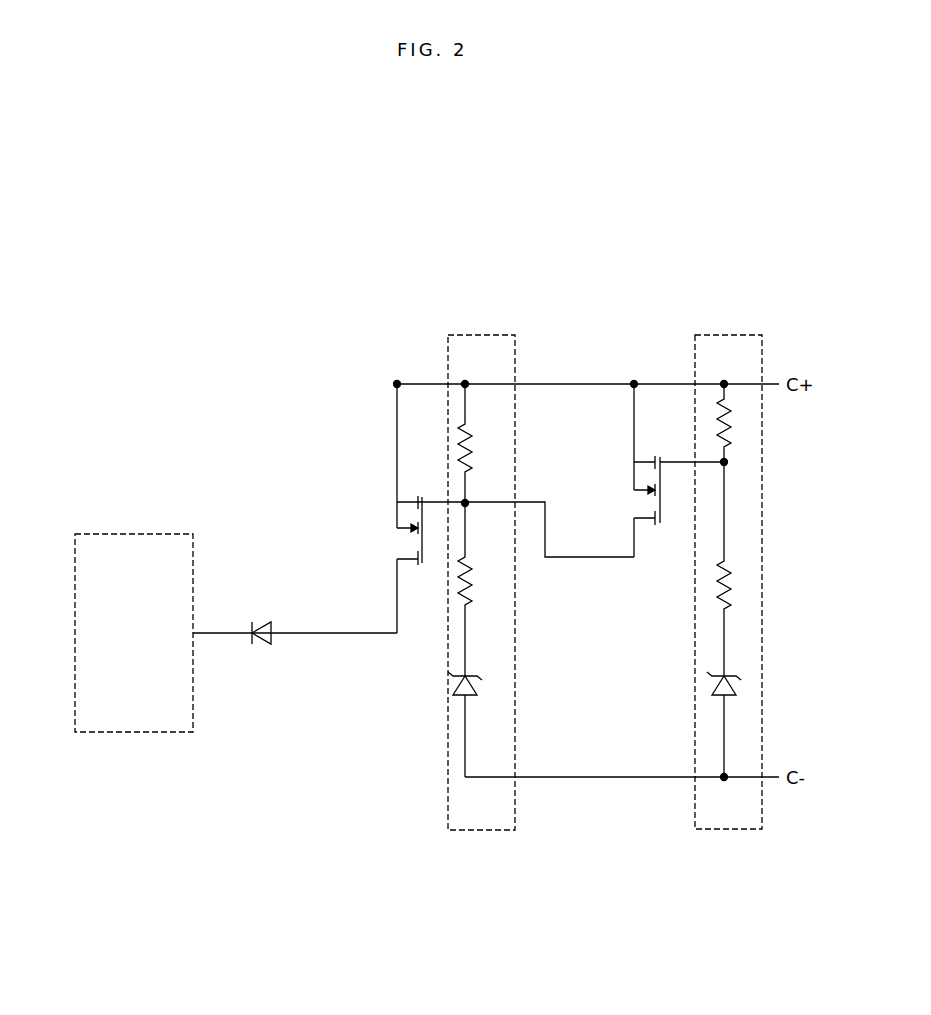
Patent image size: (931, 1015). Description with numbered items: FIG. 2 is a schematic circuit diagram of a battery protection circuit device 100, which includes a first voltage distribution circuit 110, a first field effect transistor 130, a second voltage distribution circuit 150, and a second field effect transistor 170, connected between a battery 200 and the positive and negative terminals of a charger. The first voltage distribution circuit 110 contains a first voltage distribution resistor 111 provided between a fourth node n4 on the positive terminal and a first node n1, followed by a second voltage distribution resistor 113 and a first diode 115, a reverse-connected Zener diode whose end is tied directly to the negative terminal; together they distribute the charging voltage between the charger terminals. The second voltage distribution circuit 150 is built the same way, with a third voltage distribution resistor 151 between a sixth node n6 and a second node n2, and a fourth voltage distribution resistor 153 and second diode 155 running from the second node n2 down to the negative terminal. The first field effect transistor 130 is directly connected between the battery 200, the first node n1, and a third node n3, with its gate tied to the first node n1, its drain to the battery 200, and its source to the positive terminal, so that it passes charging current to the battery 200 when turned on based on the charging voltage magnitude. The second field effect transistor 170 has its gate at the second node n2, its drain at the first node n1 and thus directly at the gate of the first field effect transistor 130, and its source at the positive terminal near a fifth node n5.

The battery protection circuit device 100 is at (768, 259).
The first voltage distribution circuit 110 is at (448, 335).
The first voltage distribution resistor 111 is at (473, 435).
The second voltage distribution resistor 113 is at (472, 566).
The first diode 115 is at (474, 675).
The first field effect transistor 130 is at (409, 492).
The second voltage distribution circuit 150 is at (695, 335).
The third voltage distribution resistor 151 is at (730, 426).
The fourth voltage distribution resistor 153 is at (731, 566).
The second diode 155 is at (733, 675).
The second field effect transistor 170 is at (641, 455).
The battery 200 is at (110, 534).
The first node n1 is at (465, 503).
The second node n2 is at (724, 462).
The third node n3 is at (397, 384).
The fourth node n4 is at (465, 384).
The fifth node n5 is at (634, 384).
The sixth node n6 is at (724, 384).